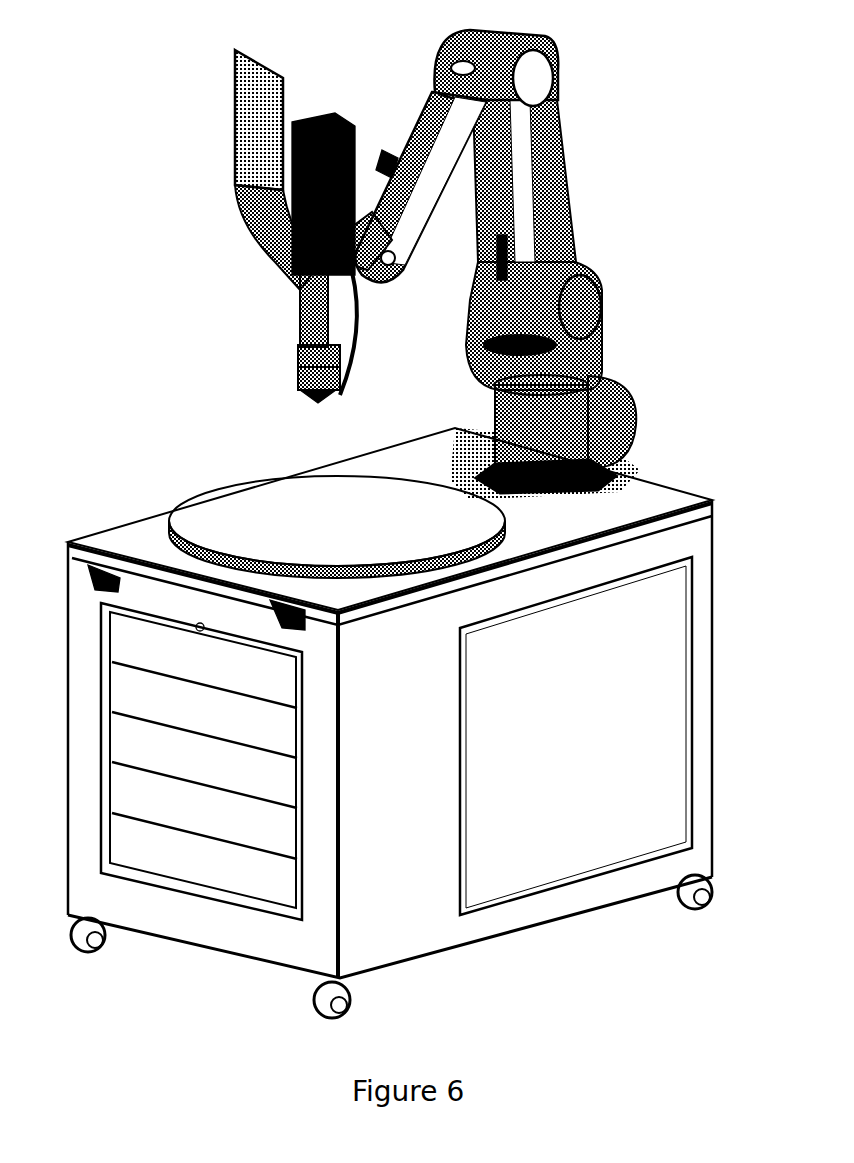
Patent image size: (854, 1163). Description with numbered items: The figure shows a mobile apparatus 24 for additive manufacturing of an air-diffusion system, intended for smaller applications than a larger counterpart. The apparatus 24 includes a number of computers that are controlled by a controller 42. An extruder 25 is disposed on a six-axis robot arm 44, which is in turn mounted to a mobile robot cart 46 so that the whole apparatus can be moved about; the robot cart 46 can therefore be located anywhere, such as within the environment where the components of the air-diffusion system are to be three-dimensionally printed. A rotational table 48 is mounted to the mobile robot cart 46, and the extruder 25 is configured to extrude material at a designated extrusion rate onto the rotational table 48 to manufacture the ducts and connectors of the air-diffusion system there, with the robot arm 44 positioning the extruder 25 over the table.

The apparatus 24 is at (176, 40).
The extruder 25 is at (236, 186).
The controller 42 is at (530, 838).
The 6-axis robot arm 44 is at (530, 418).
The mobile robot cart 46 is at (400, 686).
The rotational table 48 is at (320, 500).